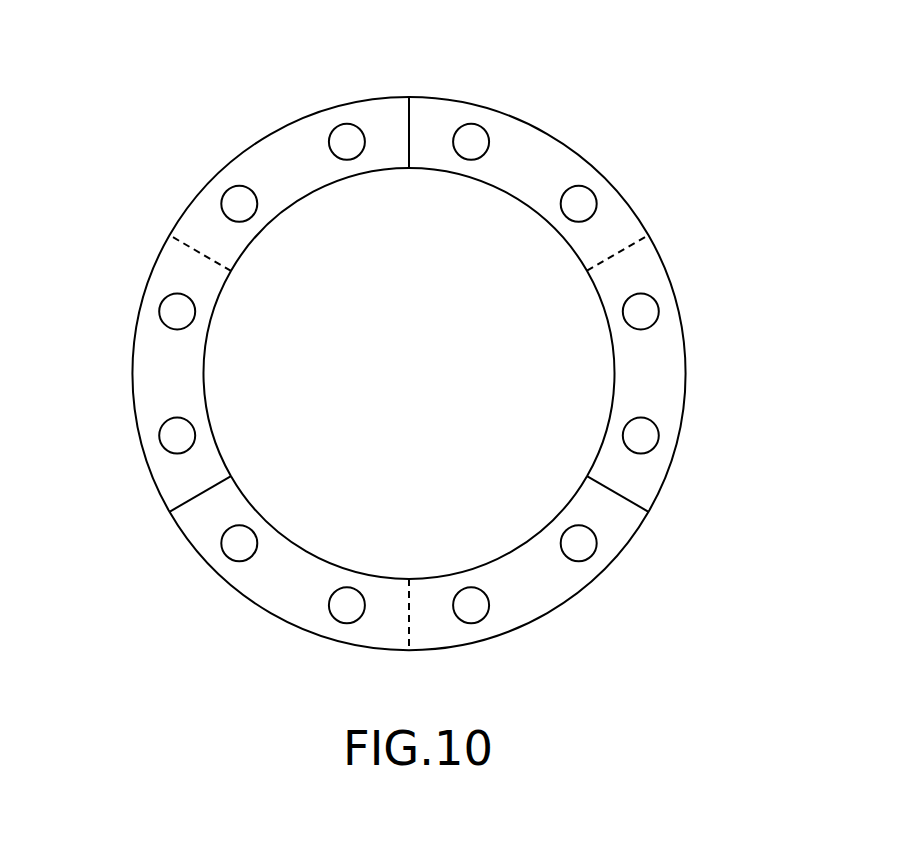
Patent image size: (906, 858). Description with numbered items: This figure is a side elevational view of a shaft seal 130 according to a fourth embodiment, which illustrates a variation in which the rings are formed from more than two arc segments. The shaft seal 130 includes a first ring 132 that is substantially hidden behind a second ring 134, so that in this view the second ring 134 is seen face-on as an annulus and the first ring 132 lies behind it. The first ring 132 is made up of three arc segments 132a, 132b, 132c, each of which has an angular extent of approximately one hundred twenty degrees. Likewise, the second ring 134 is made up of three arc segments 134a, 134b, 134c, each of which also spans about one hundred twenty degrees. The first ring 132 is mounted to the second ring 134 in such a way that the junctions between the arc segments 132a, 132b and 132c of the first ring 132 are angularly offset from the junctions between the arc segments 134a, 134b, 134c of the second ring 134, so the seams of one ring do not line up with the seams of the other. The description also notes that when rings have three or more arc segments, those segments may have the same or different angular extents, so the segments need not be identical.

The shaft seal 130 is at (516, 48).
The first ring 132 is at (271, 182).
The arc segment 132a is at (316, 127).
The arc segment 132b is at (655, 392).
The arc segment 132c is at (195, 519).
The second ring 134 is at (602, 183).
The arc segment 134a is at (643, 266).
The arc segment 134b is at (440, 628).
The arc segment 134c is at (153, 377).